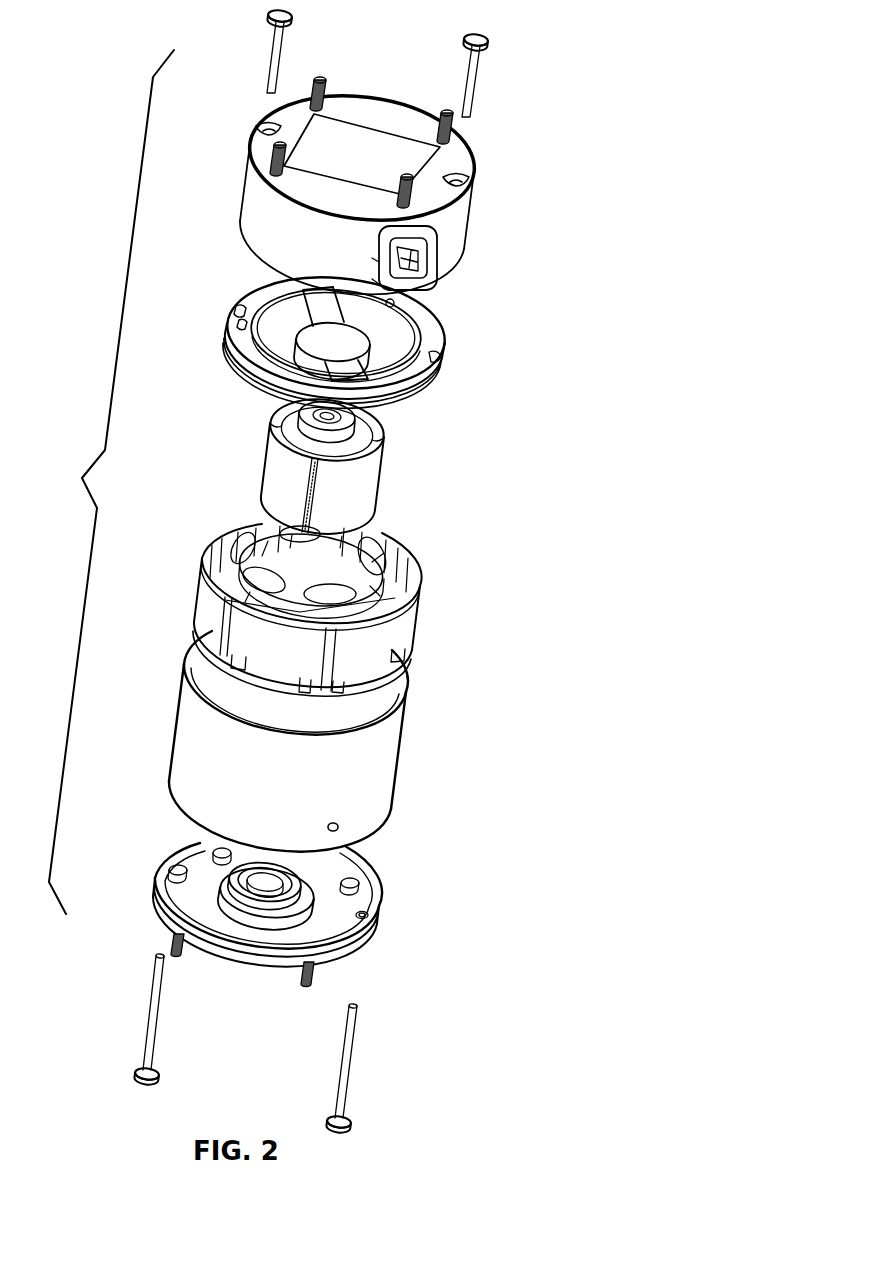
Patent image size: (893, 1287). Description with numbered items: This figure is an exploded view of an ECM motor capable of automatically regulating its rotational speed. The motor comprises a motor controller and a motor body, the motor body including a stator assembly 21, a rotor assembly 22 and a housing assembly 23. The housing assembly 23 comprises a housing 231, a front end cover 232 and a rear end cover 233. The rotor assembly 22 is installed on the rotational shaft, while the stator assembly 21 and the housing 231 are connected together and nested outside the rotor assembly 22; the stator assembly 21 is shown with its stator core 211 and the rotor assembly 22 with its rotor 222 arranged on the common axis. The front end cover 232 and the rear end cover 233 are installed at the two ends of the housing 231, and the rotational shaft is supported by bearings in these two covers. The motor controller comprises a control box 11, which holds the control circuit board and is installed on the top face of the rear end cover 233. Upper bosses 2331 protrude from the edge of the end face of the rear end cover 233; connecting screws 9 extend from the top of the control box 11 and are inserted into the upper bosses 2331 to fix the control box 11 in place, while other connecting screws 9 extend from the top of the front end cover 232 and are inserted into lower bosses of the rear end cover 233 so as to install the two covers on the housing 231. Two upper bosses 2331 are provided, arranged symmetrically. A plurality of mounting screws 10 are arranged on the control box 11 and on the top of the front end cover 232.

The connecting screws 9 is at (275, 60).
The mounting screws 10 is at (318, 95).
The control box 11 is at (275, 213).
The stator assembly 21 is at (432, 603).
The stator core 211 is at (213, 612).
The rotor assembly 22 is at (427, 467).
The rotor 222 is at (290, 483).
The housing assembly 23 is at (410, 750).
The housing 231 is at (242, 760).
The front end cover 232 is at (210, 893).
The rear end cover 233 is at (350, 343).
The upper bosses 2331 is at (230, 313).